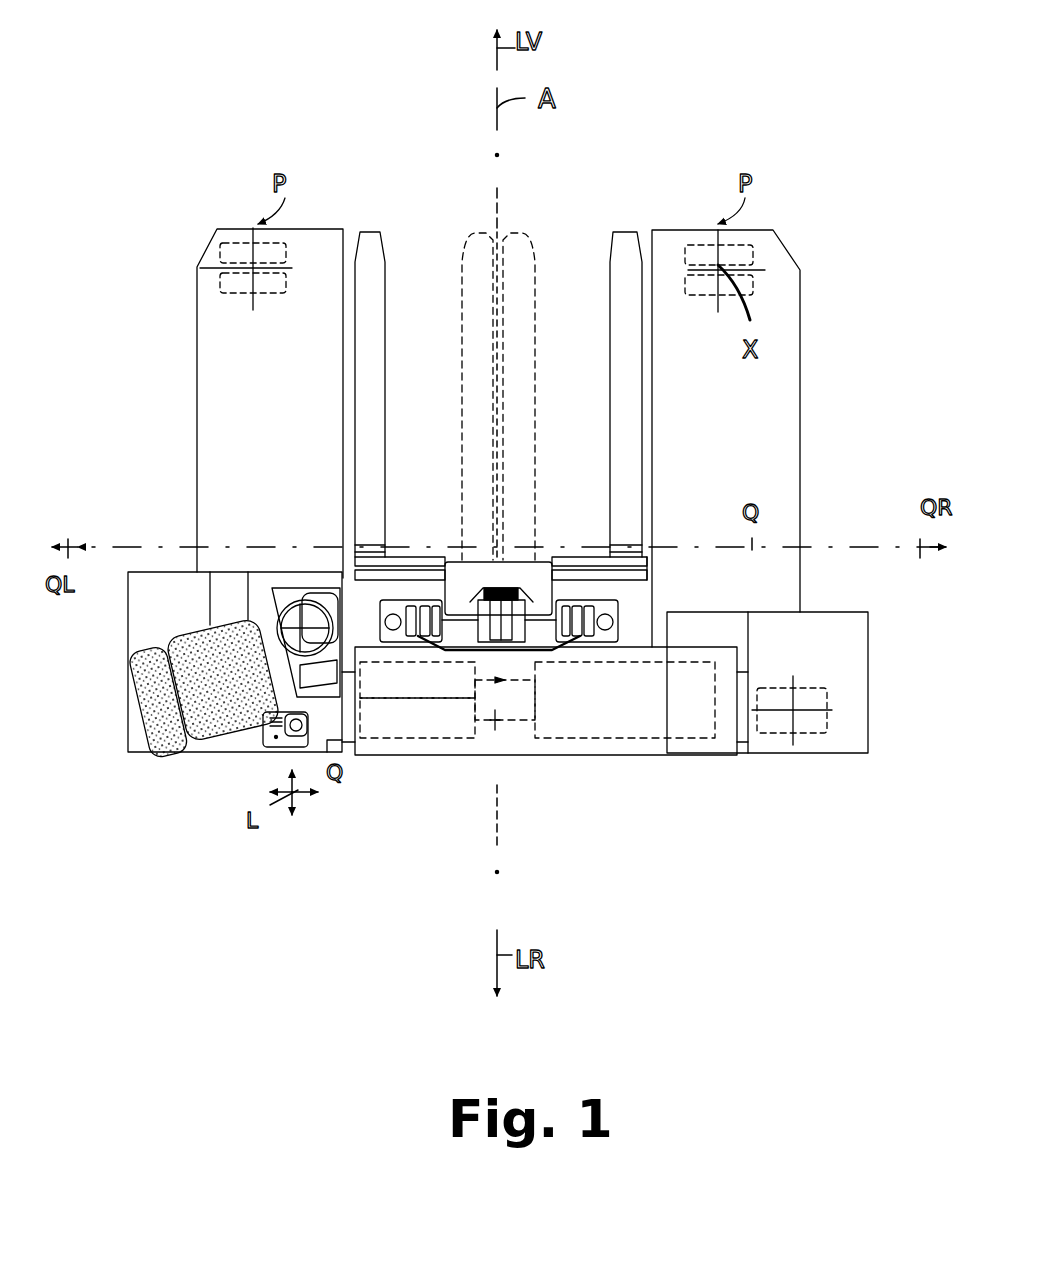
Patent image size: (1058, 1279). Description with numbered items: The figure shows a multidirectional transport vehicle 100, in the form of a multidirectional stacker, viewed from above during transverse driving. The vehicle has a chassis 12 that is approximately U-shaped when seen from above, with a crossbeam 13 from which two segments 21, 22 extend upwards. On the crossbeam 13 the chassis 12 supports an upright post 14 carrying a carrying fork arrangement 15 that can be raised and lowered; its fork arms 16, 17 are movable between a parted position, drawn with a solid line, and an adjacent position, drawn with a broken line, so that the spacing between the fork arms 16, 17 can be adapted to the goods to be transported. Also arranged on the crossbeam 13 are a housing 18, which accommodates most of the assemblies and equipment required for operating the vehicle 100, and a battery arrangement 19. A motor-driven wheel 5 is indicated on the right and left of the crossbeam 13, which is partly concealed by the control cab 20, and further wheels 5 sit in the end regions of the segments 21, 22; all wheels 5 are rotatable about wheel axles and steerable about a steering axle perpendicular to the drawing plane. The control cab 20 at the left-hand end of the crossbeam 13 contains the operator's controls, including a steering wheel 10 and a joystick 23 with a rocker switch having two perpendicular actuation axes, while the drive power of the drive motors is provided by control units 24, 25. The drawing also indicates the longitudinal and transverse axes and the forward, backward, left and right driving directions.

The multidirectional transport vehicle 100 is at (228, 78).
The wheel 5 is at (232, 252).
The steering wheel 10 is at (302, 588).
The chassis 12 is at (175, 545).
The crossbeam 13 is at (495, 765).
The upright post 14 is at (468, 580).
The carrying fork arrangement 15 is at (428, 248).
The fork arm 16 is at (462, 386).
The fork arm 17 is at (610, 395).
The housing 18 is at (545, 741).
The battery arrangement 19 is at (530, 745).
The control cab 20 is at (122, 683).
The segment 21 is at (270, 403).
The segment 22 is at (726, 438).
The joystick 23 is at (275, 755).
The control unit 24 is at (417, 680).
The control unit 25 is at (417, 718).